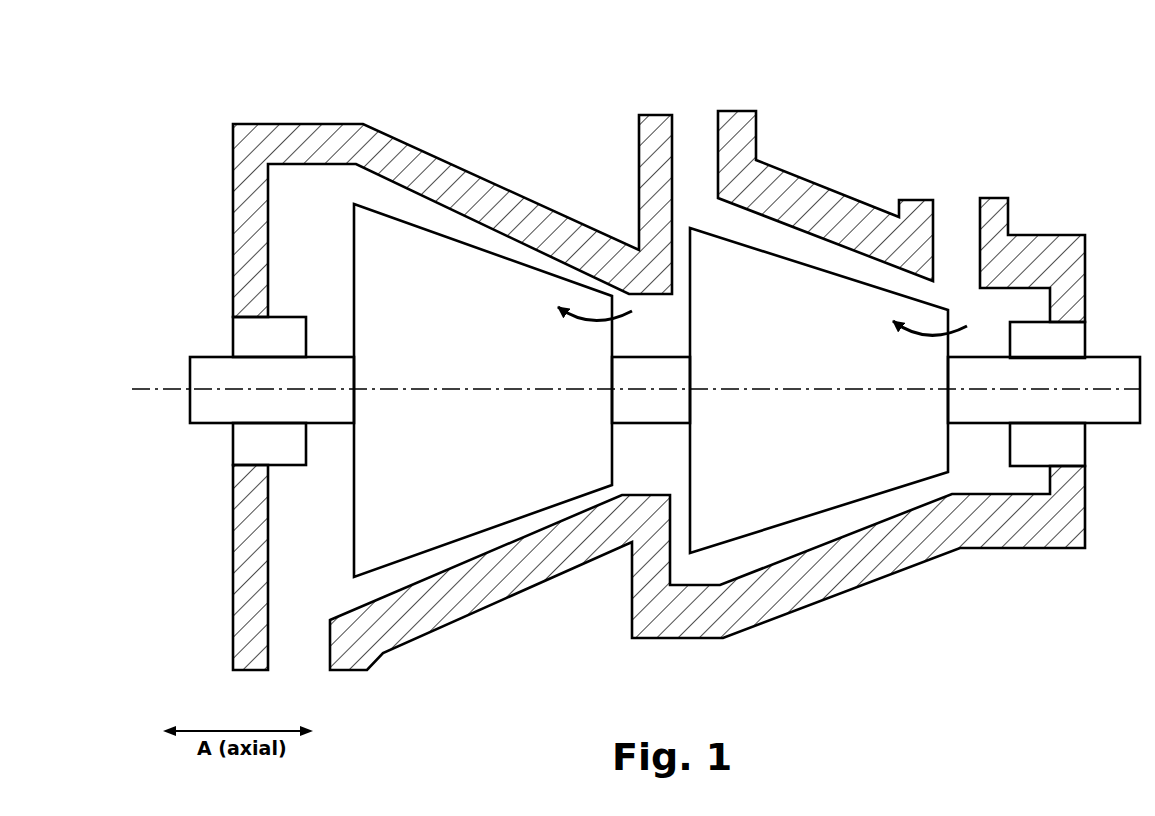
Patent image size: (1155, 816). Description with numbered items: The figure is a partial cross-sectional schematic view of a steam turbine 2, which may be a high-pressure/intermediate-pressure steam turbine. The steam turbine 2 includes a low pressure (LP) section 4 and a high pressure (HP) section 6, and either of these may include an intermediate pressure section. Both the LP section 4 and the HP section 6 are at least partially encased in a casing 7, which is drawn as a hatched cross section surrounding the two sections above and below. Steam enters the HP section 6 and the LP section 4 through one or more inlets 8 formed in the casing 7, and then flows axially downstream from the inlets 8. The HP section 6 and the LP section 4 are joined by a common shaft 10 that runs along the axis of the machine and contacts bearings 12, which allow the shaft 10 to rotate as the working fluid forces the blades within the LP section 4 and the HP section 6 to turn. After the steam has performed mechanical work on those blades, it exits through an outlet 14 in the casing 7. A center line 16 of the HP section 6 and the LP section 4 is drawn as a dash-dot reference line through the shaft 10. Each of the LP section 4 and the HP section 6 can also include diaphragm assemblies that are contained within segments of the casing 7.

The steam turbine 2 is at (233, 90).
The low pressure (LP) section 4 is at (483, 390).
The high pressure (HP) section 6 is at (819, 390).
The casing 7 is at (448, 160).
The inlet 8 is at (693, 115).
The common shaft 10 is at (333, 368).
The bearings 12 is at (659, 391).
The outlet 14 is at (305, 674).
The center line (CL) 16 is at (632, 363).